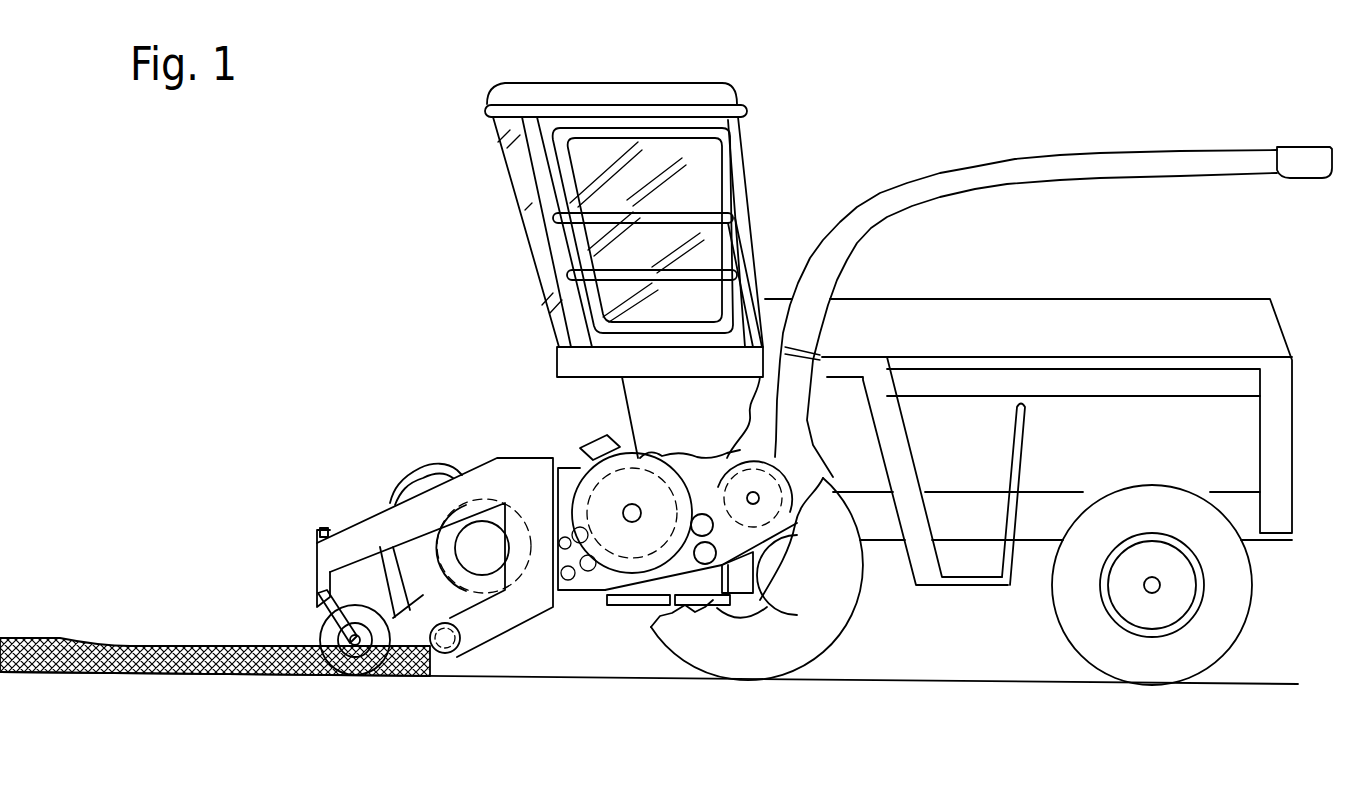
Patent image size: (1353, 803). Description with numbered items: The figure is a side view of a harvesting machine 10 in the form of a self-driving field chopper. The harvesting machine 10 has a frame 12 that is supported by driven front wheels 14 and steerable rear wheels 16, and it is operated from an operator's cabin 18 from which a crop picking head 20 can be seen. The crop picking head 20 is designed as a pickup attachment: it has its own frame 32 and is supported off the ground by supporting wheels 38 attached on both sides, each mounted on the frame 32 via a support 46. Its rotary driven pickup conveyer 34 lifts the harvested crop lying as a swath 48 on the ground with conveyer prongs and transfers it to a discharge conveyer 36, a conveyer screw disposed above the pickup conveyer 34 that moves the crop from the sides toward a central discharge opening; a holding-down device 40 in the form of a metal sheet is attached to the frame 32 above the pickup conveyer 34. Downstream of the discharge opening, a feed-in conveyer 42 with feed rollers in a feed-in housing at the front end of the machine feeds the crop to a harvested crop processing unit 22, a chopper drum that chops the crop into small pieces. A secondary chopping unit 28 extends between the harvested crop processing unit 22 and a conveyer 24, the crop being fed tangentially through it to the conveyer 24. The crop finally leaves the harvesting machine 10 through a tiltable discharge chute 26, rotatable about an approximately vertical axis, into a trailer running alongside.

The harvesting machine 10 is at (380, 268).
The frame 12 is at (882, 548).
The front wheels 14 is at (838, 633).
The rear wheels 16 is at (1118, 666).
The operator's cabin 18 is at (523, 187).
The crop picking head 20 is at (313, 495).
The harvested crop processing unit 22 is at (628, 580).
The conveyer 24 is at (723, 450).
The discharge chute 26 is at (935, 175).
The secondary chopping unit 28 is at (708, 584).
The frame 32 is at (513, 612).
The pickup conveyer 34 is at (447, 662).
The discharge conveyer 36 is at (425, 557).
The supporting wheels 38 is at (343, 663).
The holding-down device 40 is at (397, 600).
The feed-in conveyer 42 is at (585, 611).
The support 46 is at (313, 550).
The swath 48 is at (117, 646).